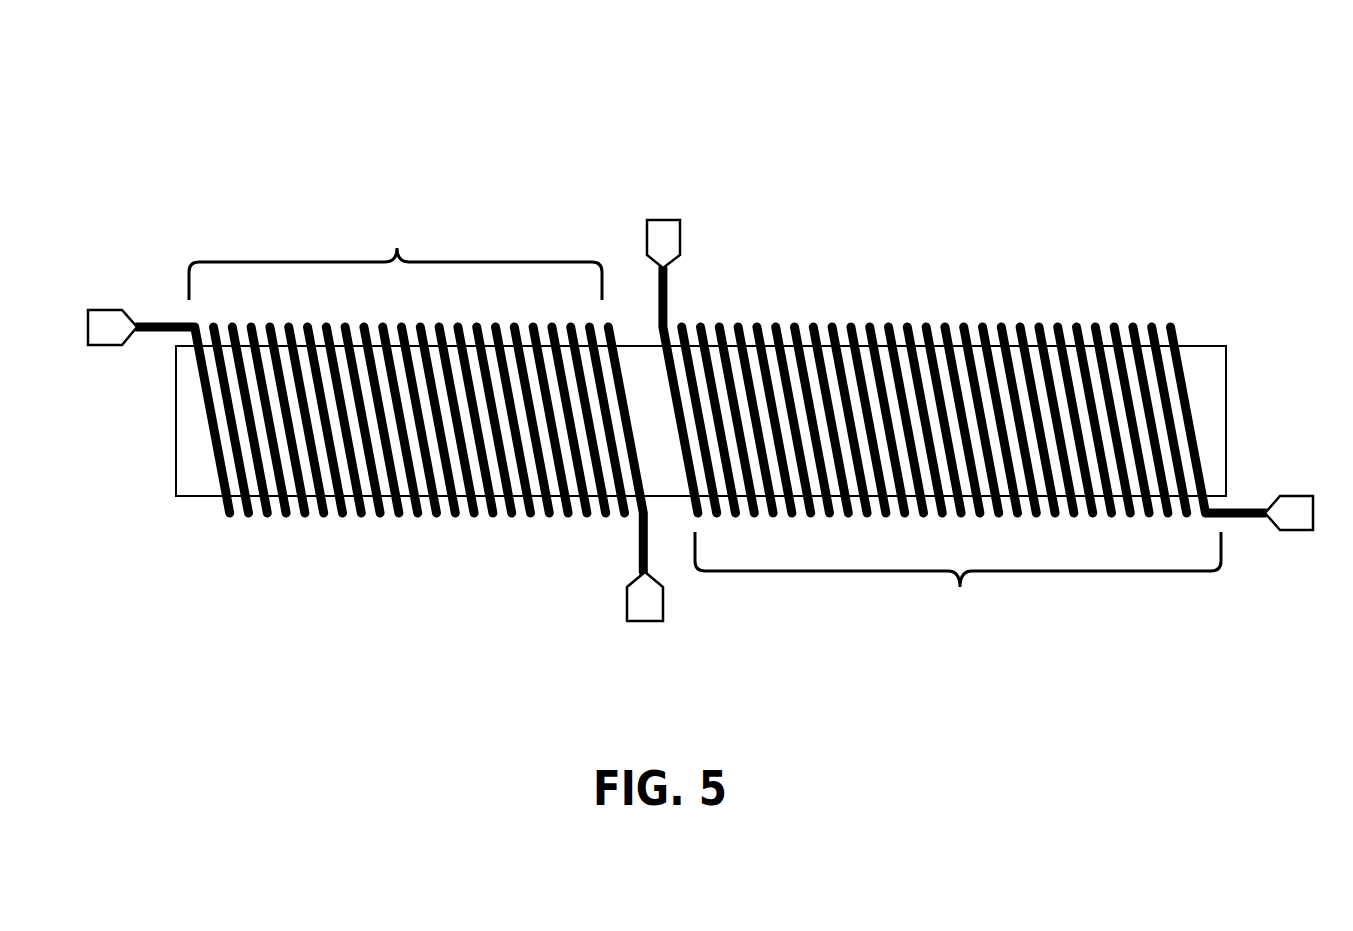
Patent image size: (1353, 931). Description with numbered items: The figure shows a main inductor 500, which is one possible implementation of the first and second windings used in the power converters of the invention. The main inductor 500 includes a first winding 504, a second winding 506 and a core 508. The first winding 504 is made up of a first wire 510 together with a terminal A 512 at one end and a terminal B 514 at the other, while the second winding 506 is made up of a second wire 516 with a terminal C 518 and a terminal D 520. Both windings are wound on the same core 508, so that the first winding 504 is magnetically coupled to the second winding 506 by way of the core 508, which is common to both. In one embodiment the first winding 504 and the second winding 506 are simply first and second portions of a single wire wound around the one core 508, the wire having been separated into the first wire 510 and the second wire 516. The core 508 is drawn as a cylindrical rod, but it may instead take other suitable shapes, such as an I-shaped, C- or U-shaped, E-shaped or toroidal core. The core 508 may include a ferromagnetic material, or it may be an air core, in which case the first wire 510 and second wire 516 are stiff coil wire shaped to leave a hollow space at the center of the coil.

The main inductor 500 is at (1122, 115).
The first winding 504 is at (398, 214).
The second winding 506 is at (965, 618).
The core 508 is at (172, 415).
The first wire 510 is at (228, 519).
The terminal A 512 is at (100, 302).
The terminal B 514 is at (620, 603).
The second wire 516 is at (1177, 327).
The terminal C 518 is at (663, 213).
The terminal D 520 is at (1308, 488).